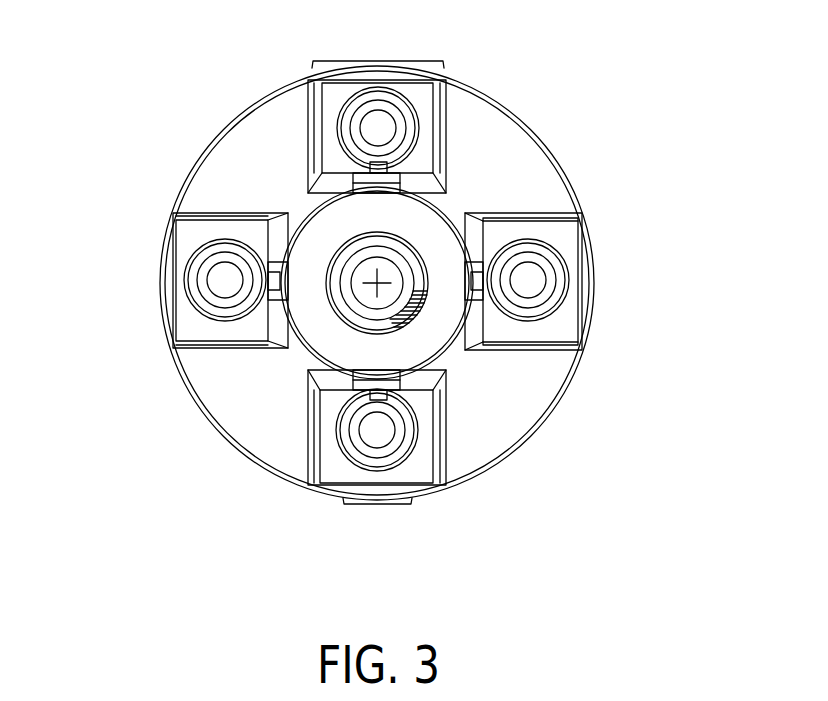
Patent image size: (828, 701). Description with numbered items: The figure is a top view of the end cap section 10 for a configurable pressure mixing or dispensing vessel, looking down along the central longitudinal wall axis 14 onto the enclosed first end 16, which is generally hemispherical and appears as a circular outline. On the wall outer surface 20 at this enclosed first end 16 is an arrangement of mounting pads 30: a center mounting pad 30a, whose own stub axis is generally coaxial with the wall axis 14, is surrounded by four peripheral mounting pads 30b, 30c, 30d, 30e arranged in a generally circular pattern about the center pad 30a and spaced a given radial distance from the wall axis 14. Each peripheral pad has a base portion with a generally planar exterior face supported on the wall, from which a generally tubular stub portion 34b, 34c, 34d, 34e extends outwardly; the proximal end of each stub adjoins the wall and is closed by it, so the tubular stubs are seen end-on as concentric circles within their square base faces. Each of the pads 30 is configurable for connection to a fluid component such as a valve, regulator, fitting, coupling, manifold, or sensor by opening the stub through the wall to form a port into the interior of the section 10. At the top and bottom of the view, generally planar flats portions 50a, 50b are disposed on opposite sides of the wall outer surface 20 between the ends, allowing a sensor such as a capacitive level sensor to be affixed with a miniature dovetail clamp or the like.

The end cap section 10 is at (640, 117).
The central longitudinal wall axis 14 is at (377, 283).
The enclosed first end 16 is at (252, 460).
The wall outer surface 20 is at (528, 402).
The mounting pad 30 is at (338, 323).
The center mounting pad 30a is at (308, 213).
The peripheral mounting pad 30b is at (446, 118).
The peripheral mounting pad 30c is at (173, 285).
The peripheral mounting pad 30d is at (370, 483).
The peripheral mounting pad 30e is at (562, 213).
The tubular stub portion 34b is at (340, 128).
The tubular stub portion 34c is at (205, 312).
The tubular stub portion 34d is at (348, 455).
The tubular stub portion 34e is at (548, 310).
The flats portion 50a is at (343, 62).
The flats portion 50b is at (400, 503).